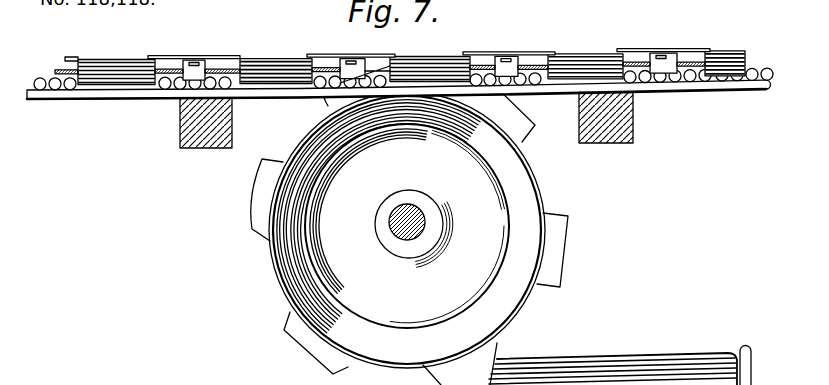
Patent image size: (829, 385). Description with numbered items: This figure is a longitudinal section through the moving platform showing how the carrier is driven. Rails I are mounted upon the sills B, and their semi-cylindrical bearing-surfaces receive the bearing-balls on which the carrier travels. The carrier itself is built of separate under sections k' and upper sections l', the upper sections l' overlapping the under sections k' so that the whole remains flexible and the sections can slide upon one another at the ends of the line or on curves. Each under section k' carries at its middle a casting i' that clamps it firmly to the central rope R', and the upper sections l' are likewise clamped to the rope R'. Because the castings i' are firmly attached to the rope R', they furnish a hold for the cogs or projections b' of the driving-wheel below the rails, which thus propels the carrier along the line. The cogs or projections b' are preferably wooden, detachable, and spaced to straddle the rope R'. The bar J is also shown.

The rope R' is at (53, 71).
The casting i' is at (403, 81).
The rails I is at (399, 101).
The sills B is at (416, 121).
The under sections k' is at (411, 60).
The upper sections l' is at (429, 56).
The cogs or projections b' is at (407, 236).
The laminated bar J is at (620, 362).